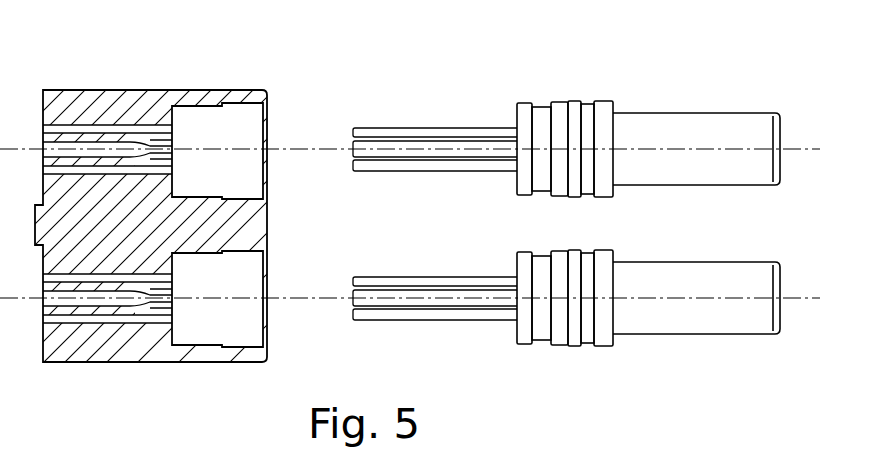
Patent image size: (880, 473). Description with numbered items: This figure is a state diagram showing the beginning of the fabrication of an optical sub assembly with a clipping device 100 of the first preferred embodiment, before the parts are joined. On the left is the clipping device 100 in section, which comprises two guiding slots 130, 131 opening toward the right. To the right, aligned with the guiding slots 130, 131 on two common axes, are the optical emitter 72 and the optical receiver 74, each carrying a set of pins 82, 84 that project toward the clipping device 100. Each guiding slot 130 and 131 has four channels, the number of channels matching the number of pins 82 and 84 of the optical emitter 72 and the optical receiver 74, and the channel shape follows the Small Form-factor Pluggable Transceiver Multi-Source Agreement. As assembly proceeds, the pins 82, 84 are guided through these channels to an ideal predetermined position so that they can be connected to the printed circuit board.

The clipping device 100 is at (192, 90).
The guiding slot 130 is at (252, 128).
The guiding slot 131 is at (255, 327).
The pins 82 is at (370, 130).
The pins 84 is at (370, 322).
The optical emitter 72 is at (692, 127).
The optical receiver 74 is at (692, 318).